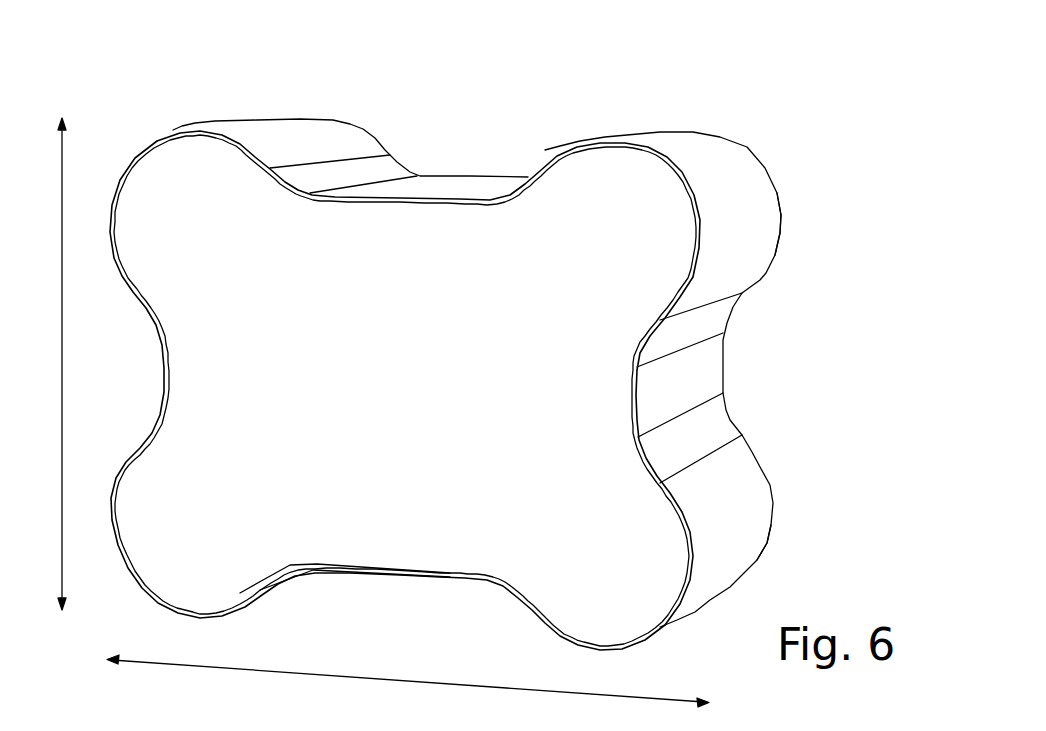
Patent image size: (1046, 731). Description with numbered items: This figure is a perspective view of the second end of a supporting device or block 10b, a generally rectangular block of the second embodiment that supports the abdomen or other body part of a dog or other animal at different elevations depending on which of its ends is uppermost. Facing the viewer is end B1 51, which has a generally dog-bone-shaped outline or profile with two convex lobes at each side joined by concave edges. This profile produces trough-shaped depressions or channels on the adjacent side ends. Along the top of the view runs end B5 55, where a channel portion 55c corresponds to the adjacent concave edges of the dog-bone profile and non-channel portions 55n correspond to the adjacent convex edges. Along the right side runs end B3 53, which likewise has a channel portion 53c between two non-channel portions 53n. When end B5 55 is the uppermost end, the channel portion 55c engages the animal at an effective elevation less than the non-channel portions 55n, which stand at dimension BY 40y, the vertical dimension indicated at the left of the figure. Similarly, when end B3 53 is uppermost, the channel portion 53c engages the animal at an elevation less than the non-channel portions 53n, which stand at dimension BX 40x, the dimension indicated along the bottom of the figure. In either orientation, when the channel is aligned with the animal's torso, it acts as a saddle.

The supporting device or block 10b is at (378, 347).
The end B1 51 is at (210, 378).
The end B3 53 is at (835, 292).
The non-channel portions of end B3 53n is at (757, 227).
The channel portion of end B3 53c is at (690, 392).
The end B5 55 is at (343, 90).
The non-channel portions of end B5 55n is at (280, 130).
The channel portion of end B5 55c is at (471, 190).
The dimension BX 40x is at (408, 686).
The dimension BY 40y is at (35, 364).